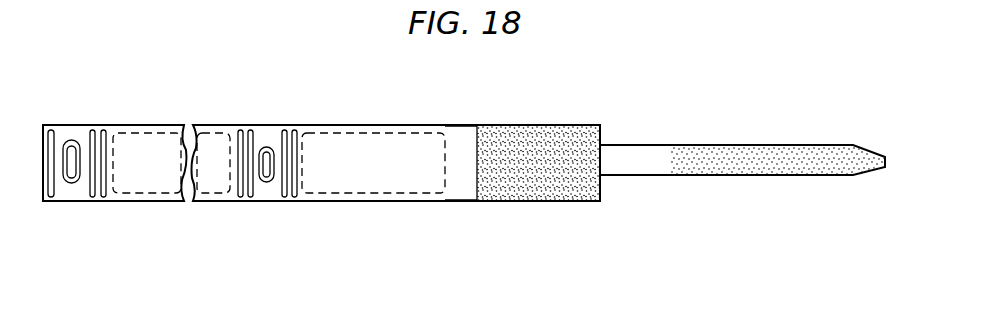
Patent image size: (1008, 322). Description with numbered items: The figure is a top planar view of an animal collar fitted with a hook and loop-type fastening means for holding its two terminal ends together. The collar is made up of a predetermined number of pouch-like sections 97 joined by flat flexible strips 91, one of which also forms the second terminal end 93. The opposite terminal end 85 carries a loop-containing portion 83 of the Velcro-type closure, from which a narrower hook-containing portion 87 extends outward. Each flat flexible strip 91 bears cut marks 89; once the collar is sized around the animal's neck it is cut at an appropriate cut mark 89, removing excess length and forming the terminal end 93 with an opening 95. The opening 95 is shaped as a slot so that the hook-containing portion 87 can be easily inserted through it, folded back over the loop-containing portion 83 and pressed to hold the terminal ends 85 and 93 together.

The loop-containing portion 83 is at (558, 124).
The terminal end 85 is at (460, 124).
The hook-containing portion 87 is at (712, 145).
The cut mark 89 is at (52, 126).
The flat flexible strip 91 is at (66, 206).
The terminal end 93 is at (43, 200).
The opening 95 is at (73, 149).
The pouch-like sections 97 is at (158, 124).